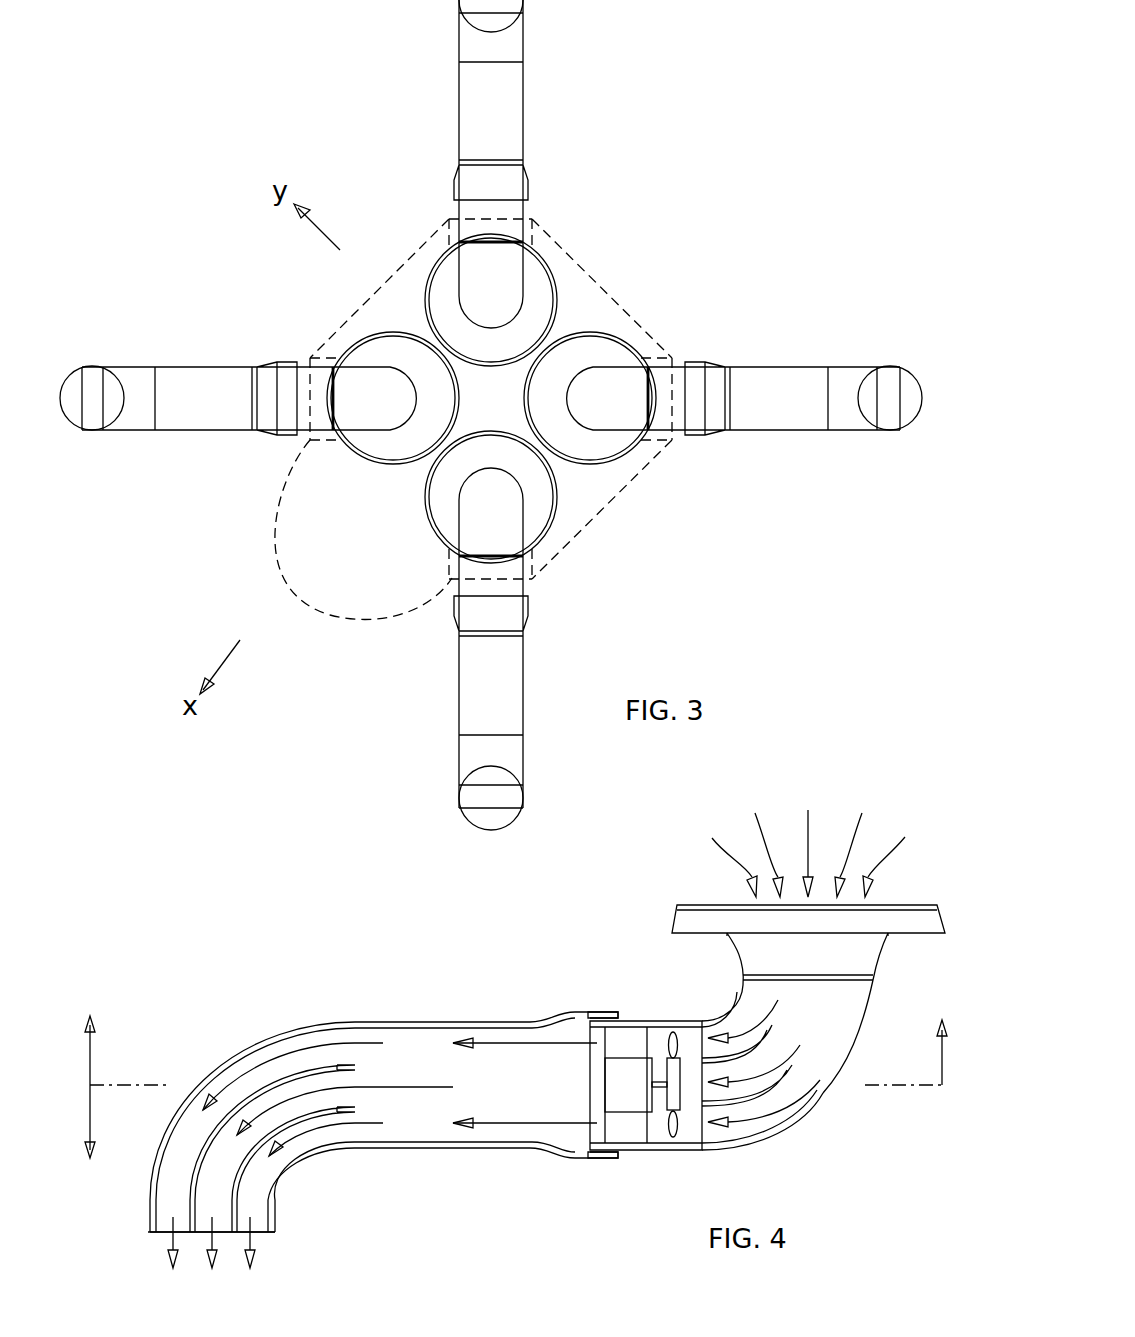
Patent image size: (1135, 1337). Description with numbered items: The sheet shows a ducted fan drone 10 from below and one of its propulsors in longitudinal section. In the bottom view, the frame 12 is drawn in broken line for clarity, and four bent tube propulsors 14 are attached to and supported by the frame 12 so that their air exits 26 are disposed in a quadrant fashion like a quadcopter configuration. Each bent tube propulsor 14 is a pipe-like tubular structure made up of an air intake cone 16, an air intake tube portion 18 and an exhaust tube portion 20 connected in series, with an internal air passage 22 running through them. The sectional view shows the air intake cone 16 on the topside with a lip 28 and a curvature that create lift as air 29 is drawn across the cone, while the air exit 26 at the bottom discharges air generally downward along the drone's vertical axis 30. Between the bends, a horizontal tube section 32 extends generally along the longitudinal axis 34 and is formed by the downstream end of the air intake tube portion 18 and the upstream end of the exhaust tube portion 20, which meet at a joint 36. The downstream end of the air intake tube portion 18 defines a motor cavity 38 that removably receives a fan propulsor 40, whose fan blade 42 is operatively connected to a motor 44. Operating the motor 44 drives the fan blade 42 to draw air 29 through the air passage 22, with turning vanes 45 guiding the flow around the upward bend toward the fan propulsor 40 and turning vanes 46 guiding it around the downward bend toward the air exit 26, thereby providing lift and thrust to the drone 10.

In FIG. 3, the ducted fan drone 10 is at (767, 100).
In FIG. 3, the frame 12 is at (590, 490).
In FIG. 3, the bent tube propulsor 14 is at (560, 128).
In FIG. 4, the bent tube propulsor 14 is at (350, 915).
In FIG. 3, the air intake cone 16 is at (520, 245).
In FIG. 4, the air intake cone 16 is at (915, 905).
In FIG. 3, the air intake tube portion 18 is at (510, 292).
In FIG. 4, the air intake tube portion 18 is at (842, 1088).
In FIG. 3, the exhaust tube portion 20 is at (505, 75).
In FIG. 4, the exhaust tube portion 20 is at (293, 1025).
In FIG. 4, the air passage 22 is at (428, 1055).
In FIG. 3, the air exit 26 is at (905, 375).
In FIG. 4, the air exit 26 is at (150, 1240).
In FIG. 4, the lip 28 is at (680, 922).
In FIG. 4, the air 29 is at (810, 825).
In FIG. 4, the vertical axis 30 is at (90, 1067).
In FIG. 4, the horizontal tube section 32 is at (536, 1099).
In FIG. 4, the longitudinal axis 34 is at (893, 1090).
In FIG. 4, the joint 36 is at (592, 1005).
In FIG. 4, the motor cavity 38 is at (700, 1150).
In FIG. 4, the fan propulsor 40 is at (667, 1058).
In FIG. 4, the fan blade 42 is at (673, 1035).
In FIG. 4, the motor 44 is at (642, 1062).
In FIG. 4, the turning vanes 45 is at (770, 1085).
In FIG. 4, the turning vanes 46 is at (257, 1080).